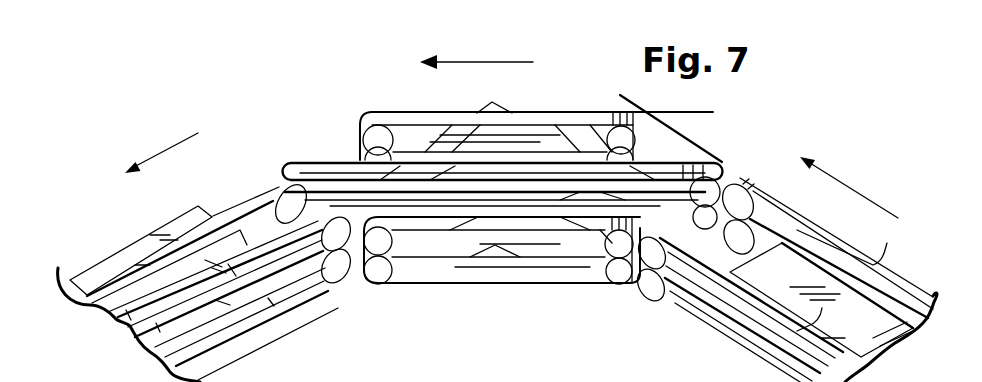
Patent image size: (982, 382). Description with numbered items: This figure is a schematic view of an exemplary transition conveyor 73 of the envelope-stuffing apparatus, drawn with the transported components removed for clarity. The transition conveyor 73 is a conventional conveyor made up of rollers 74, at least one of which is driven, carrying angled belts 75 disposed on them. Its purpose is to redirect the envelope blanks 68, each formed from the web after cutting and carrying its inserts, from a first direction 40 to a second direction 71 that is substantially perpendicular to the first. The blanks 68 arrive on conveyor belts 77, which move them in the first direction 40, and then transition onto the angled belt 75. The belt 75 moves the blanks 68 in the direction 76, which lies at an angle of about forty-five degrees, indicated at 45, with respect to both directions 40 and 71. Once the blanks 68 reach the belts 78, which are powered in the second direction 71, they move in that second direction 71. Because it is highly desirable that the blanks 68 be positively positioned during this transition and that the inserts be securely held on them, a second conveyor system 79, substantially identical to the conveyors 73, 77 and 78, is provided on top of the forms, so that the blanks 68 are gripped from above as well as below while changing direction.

The first direction 40 is at (849, 187).
The 45° angle 45 is at (677, 87).
The envelope blank 68 is at (498, 105).
The second direction 71 is at (161, 149).
The transition conveyor 73 is at (543, 300).
The rollers 74 is at (380, 272).
The angled belts 75 is at (458, 250).
The direction of belt travel 76 is at (476, 53).
The conveyor belts 77 is at (703, 322).
The belts 78 is at (227, 297).
The second conveyor 79 is at (271, 185).